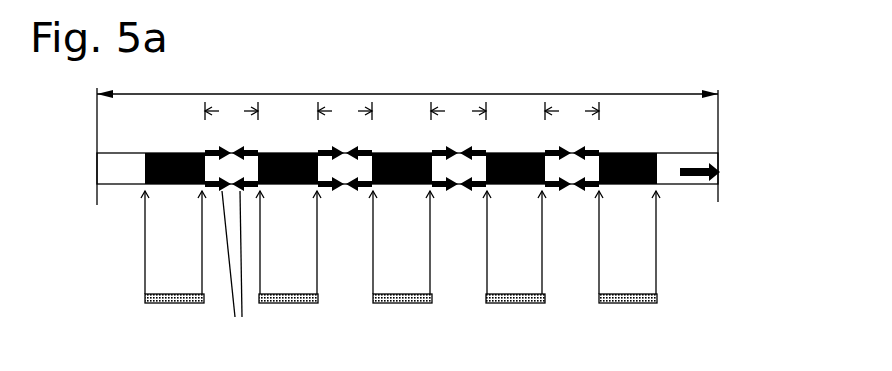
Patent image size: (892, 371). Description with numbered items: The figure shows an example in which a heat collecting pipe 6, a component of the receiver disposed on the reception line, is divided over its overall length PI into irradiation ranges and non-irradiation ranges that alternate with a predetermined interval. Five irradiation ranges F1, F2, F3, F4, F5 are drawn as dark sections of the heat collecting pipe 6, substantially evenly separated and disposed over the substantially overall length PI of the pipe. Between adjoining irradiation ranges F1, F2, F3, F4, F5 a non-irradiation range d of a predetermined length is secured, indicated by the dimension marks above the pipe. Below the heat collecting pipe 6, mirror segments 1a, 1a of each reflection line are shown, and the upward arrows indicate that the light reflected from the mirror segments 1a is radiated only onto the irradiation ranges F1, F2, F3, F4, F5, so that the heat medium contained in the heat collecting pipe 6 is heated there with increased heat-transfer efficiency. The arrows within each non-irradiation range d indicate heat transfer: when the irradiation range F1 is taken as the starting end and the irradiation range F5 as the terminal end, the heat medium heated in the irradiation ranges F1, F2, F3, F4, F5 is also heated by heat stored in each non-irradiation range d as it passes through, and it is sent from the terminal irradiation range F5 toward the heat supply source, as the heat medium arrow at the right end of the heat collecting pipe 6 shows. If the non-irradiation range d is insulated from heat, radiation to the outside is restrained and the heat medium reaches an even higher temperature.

The heat collecting pipe 6 is at (676, 184).
The mirror segment 1a is at (168, 304).
The irradiation range F1 is at (175, 154).
The irradiation range F2 is at (288, 154).
The irradiation range F3 is at (402, 154).
The irradiation range F4 is at (515, 154).
The irradiation range F5 is at (628, 154).
The non-irradiation range d is at (402, 110).
The length of the heat collecting pipe PI is at (407, 136).